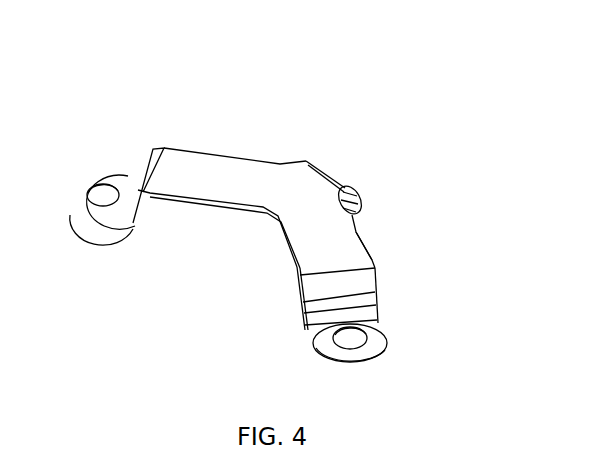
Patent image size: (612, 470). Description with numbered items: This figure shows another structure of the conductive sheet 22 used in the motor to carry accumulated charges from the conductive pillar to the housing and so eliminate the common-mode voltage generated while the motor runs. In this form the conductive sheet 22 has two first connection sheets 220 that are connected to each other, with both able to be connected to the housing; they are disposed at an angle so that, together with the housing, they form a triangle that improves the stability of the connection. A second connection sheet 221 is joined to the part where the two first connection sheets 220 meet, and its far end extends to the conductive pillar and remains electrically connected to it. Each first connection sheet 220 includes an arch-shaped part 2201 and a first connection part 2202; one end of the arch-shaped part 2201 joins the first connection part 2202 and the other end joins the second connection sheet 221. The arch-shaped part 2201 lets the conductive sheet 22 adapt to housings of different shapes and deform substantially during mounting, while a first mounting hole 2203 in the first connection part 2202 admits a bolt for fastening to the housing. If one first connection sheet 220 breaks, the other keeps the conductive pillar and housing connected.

The conductive sheet 22 is at (203, 63).
The first connection sheet 220 is at (210, 167).
The second connection sheet 221 is at (340, 176).
The arch-shaped part 2201 is at (353, 247).
The first connection part 2202 is at (365, 327).
The first mounting hole 2203 is at (313, 328).